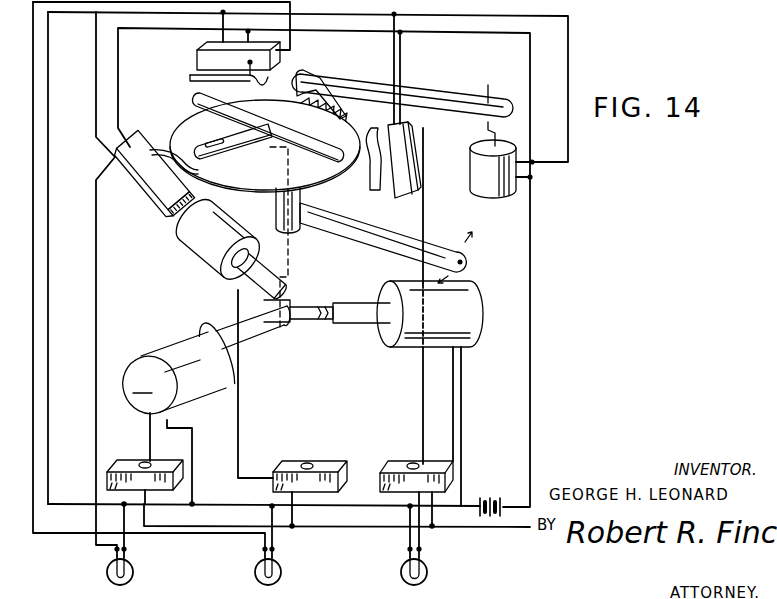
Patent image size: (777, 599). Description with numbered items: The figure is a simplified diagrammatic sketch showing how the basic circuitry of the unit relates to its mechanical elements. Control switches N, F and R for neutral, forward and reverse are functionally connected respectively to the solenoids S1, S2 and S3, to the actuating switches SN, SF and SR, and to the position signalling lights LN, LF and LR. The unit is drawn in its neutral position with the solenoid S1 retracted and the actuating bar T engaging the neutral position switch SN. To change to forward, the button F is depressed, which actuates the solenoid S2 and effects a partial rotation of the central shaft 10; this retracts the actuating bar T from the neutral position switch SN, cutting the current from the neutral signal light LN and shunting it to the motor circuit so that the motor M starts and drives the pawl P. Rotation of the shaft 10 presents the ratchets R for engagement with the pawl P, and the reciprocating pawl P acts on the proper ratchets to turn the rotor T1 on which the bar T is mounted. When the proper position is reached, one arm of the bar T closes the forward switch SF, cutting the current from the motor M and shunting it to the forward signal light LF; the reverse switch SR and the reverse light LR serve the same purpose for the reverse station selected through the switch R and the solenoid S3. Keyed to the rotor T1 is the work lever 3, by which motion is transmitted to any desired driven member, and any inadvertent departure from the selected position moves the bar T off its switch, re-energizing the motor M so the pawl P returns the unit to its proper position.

The forward switch SF is at (205, 59).
The actuating bar T is at (200, 100).
The rotor T1 is at (187, 142).
The neutral position switch SN is at (143, 181).
The solenoid S2 is at (204, 270).
The solenoid S1 is at (202, 363).
The central shaft 10 is at (289, 250).
The work lever 3 is at (430, 252).
The solenoid S3 is at (477, 340).
The reverse control switch / ratchets R is at (330, 97).
The pawl P is at (455, 95).
The reverse switch SR is at (400, 140).
The motor M is at (493, 169).
The neutral control switch N is at (143, 462).
The forward control switch F is at (308, 462).
The neutral position signal light LN is at (107, 574).
The forward position signal light LF is at (255, 574).
The reverse position signal light LR is at (401, 574).